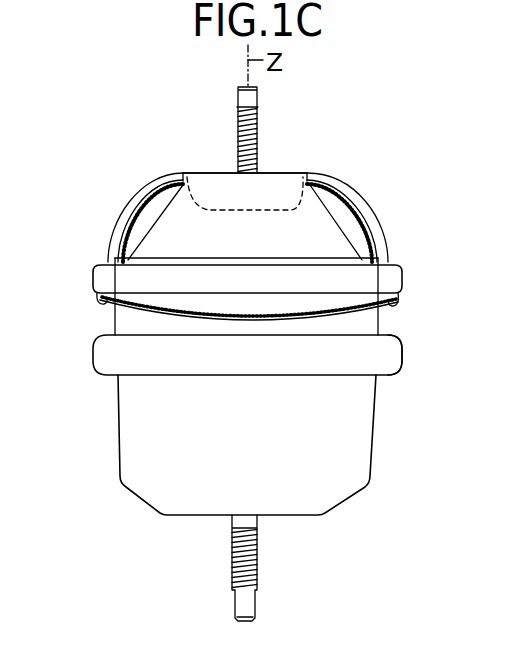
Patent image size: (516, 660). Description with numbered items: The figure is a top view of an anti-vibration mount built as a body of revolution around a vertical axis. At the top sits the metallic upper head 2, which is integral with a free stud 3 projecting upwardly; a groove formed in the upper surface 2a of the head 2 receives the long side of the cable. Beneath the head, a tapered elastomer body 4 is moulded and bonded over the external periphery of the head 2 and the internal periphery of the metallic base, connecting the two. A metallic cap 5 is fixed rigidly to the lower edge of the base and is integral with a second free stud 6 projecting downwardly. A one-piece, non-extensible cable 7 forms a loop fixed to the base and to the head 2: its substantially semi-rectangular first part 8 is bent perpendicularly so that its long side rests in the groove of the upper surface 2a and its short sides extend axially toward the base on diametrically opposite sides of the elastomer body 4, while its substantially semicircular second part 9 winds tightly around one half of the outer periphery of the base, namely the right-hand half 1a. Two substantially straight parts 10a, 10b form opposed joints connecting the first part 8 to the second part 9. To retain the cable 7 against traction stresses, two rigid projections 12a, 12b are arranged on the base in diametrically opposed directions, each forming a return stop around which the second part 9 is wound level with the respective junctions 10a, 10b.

The right-hand half of the base 1a is at (150, 283).
The upper head 2 is at (302, 178).
The upper surface of the head 2a is at (213, 172).
The free stud 3 is at (260, 116).
The elastomer body 4 is at (326, 223).
The cap 5 is at (342, 445).
The free stud 6 is at (233, 580).
The cable 7 is at (114, 210).
The first part of the cable 8 is at (147, 187).
The second part of the cable 9 is at (248, 310).
The straight part (joint) 10a is at (97, 310).
The straight part (joint) 10b is at (400, 312).
The rigid projection 12a is at (98, 284).
The rigid projection 12b is at (388, 282).